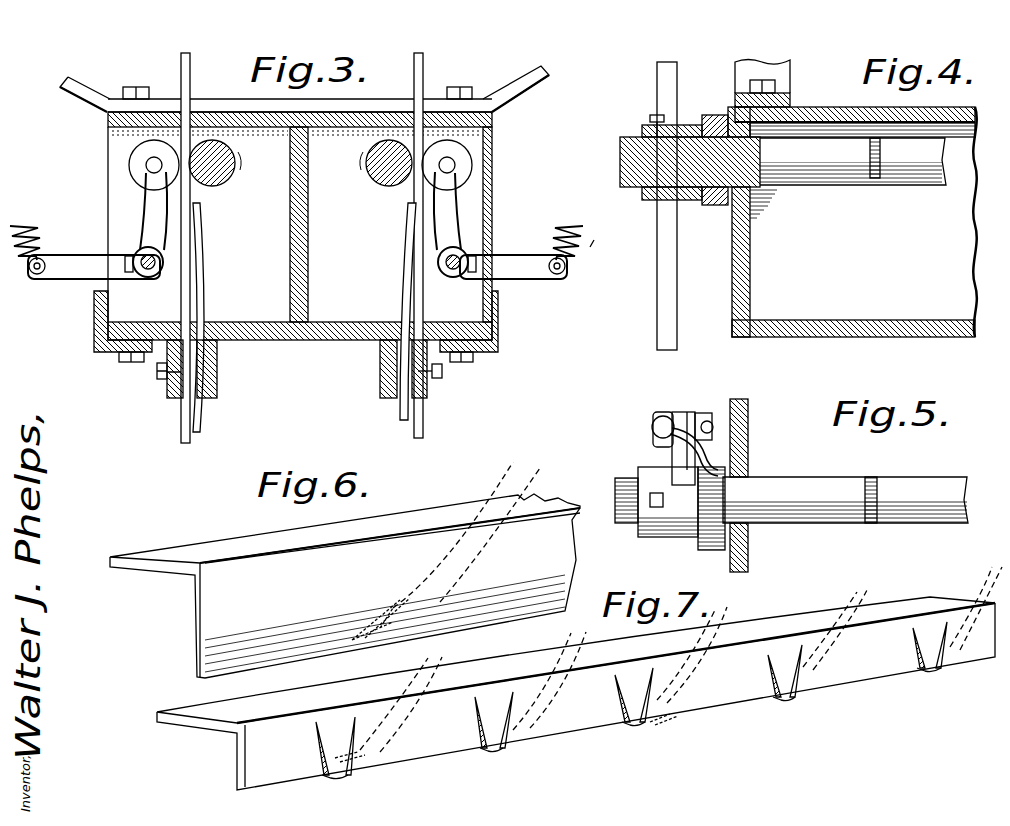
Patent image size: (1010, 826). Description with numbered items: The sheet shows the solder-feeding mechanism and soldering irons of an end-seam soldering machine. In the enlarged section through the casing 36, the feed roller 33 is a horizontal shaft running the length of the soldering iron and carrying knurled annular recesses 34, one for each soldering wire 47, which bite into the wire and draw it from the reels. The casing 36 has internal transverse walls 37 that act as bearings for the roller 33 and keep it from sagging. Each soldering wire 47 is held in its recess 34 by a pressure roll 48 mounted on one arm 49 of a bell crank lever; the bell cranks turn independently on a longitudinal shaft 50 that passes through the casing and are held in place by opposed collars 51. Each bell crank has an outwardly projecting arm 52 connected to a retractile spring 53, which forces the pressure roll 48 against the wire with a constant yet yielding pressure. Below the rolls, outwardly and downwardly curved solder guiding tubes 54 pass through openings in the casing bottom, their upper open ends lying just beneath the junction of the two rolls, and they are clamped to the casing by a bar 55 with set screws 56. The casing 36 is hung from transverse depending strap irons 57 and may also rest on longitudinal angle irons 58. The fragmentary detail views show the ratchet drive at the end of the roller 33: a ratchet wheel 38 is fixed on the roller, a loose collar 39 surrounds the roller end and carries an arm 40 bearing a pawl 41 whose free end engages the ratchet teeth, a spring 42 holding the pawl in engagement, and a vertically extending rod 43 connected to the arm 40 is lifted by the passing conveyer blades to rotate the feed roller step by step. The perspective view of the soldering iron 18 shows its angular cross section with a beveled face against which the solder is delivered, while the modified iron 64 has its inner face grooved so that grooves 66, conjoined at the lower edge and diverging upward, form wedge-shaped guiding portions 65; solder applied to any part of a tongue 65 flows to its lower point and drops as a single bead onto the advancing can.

In FIG. 6, the soldering iron 18 is at (345, 586).
In FIG. 3, the feed roller 33 is at (222, 180).
In FIG. 4, the feed roller 33 is at (815, 188).
In FIG. 5, the feed roller 33 is at (820, 486).
In FIG. 4, the annular recess 34 is at (876, 180).
In FIG. 5, the annular recess 34 is at (873, 483).
In FIG. 3, the casing 36 is at (372, 124).
In FIG. 4, the casing 36 is at (825, 338).
In FIG. 5, the casing 36 is at (749, 425).
In FIG. 3, the internal transverse wall 37 is at (115, 214).
In FIG. 4, the ratchet wheel 38 is at (716, 207).
In FIG. 5, the ratchet wheel 38 is at (749, 552).
In FIG. 4, the loose collar 39 is at (690, 124).
In FIG. 5, the loose collar 39 is at (695, 528).
In FIG. 5, the arm 40 is at (672, 455).
In FIG. 5, the pawl 41 is at (718, 452).
In FIG. 5, the spring 42 is at (700, 418).
In FIG. 4, the vertically extending rod 43 is at (668, 286).
In FIG. 5, the vertically extending rod 43 is at (655, 425).
In FIG. 3, the soldering wire 47 is at (190, 80).
In FIG. 6, the soldering wire 47 is at (382, 634).
In FIG. 7, the soldering wire 47 is at (372, 762).
In FIG. 3, the pressure roll 48 is at (130, 165).
In FIG. 3, the bell crank arm 49 is at (157, 204).
In FIG. 3, the shaft 50 is at (154, 275).
In FIG. 3, the collar 51 is at (142, 256).
In FIG. 3, the outwardly projecting arm 52 is at (68, 281).
In FIG. 3, the retractile spring 53 is at (42, 236).
In FIG. 4, the retractile spring 53 is at (605, 251).
In FIG. 3, the solder guiding tube 54 is at (207, 299).
In FIG. 6, the solder guiding tube 54 is at (505, 476).
In FIG. 7, the solder guiding tube 54 is at (410, 712).
In FIG. 3, the bar 55 is at (217, 380).
In FIG. 3, the set screw 56 is at (160, 378).
In FIG. 3, the strap iron 57 is at (516, 90).
In FIG. 4, the strap iron 57 is at (782, 72).
In FIG. 3, the longitudinal angle iron 58 is at (94, 336).
In FIG. 7, the soldering iron 64 is at (506, 673).
In FIG. 7, the wedge-shaped guiding portion 65 is at (942, 590).
In FIG. 7, the groove 66 is at (343, 778).